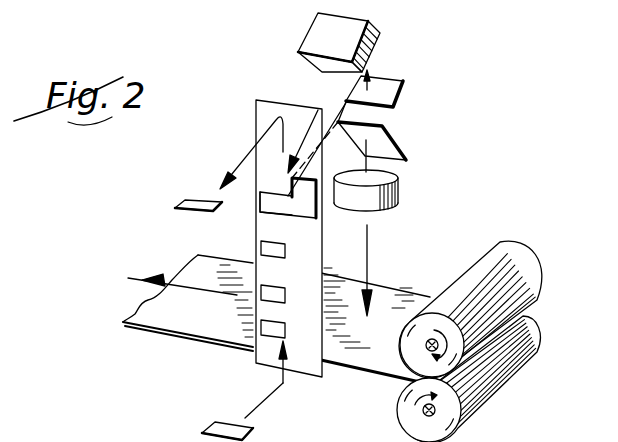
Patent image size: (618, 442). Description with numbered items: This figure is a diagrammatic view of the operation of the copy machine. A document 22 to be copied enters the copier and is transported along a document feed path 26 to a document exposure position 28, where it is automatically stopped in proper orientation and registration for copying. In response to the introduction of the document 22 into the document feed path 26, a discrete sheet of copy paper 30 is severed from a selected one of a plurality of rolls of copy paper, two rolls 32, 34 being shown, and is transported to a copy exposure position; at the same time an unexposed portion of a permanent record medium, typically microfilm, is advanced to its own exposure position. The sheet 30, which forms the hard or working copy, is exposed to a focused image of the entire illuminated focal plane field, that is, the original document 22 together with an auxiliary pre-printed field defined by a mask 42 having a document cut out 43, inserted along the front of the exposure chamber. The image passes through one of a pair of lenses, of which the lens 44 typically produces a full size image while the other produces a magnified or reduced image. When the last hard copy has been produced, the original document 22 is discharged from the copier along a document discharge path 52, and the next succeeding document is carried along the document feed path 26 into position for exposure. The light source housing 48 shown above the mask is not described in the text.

The document 22 is at (178, 202).
The document feed path 26 is at (283, 383).
The document exposure position 28 is at (322, 108).
The sheet of copy paper 30 is at (197, 326).
The roll of copy paper 32 is at (507, 262).
The roll of copy paper 34 is at (540, 342).
The mask 42 is at (305, 208).
The document cut out 43 is at (260, 192).
The lens 44 is at (401, 190).
The light source housing 48 is at (306, 36).
The document discharge path 52 is at (250, 157).